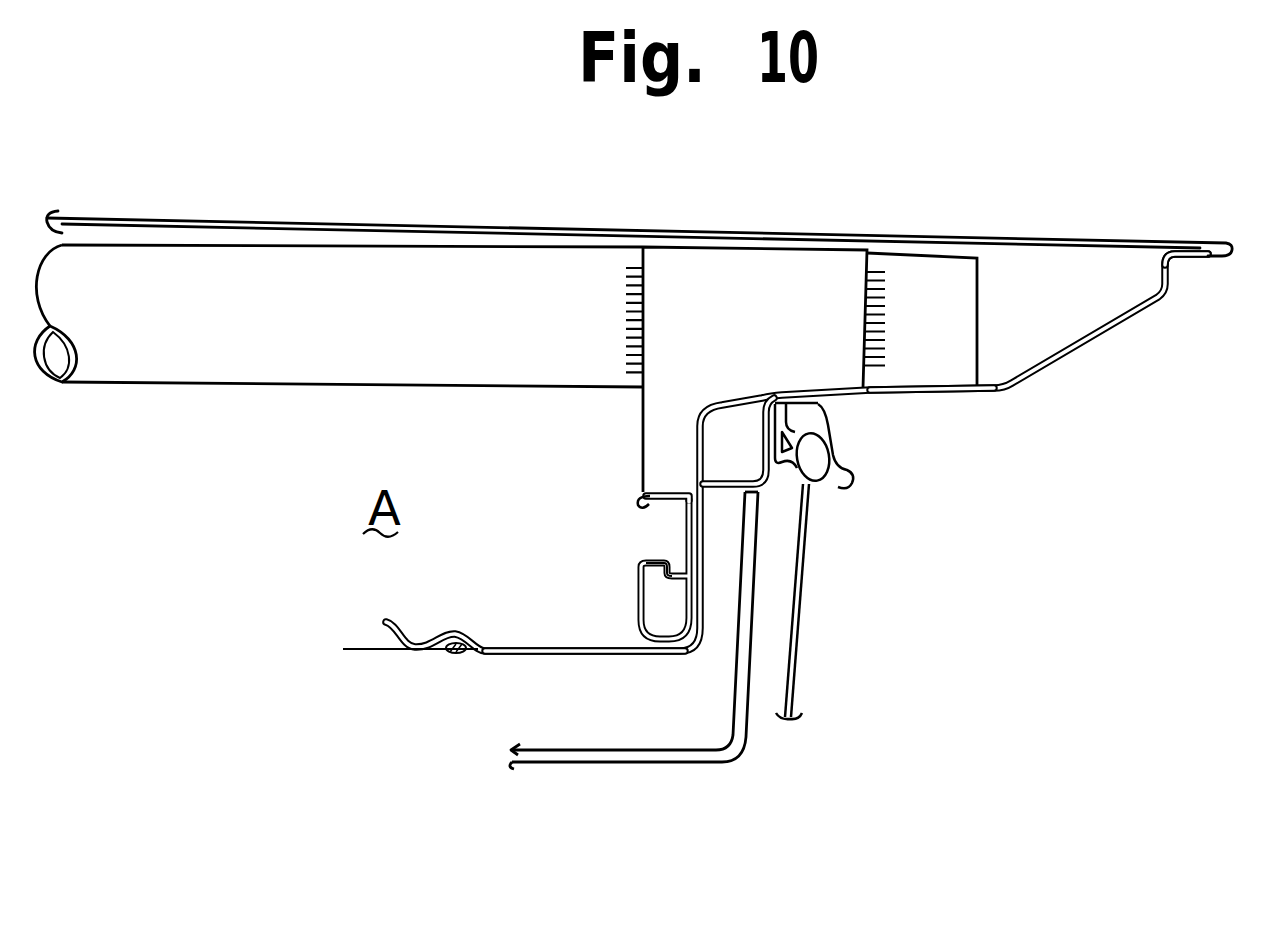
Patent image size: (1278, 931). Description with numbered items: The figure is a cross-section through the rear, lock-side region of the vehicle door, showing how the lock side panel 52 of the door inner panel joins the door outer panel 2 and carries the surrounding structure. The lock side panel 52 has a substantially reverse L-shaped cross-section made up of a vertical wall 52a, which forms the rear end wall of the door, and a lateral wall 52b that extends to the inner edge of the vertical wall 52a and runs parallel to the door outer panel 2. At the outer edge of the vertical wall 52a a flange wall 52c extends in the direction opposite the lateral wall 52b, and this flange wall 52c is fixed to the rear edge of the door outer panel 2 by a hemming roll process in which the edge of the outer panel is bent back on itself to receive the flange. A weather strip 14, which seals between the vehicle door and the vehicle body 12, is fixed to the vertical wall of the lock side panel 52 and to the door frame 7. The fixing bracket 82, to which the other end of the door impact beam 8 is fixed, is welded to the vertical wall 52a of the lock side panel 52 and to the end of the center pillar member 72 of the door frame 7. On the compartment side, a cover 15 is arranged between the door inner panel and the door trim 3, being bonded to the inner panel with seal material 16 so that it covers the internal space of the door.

The door outer panel 2 is at (1013, 238).
The door trim 3 is at (570, 766).
The door frame 7 is at (628, 585).
The door impact beam 8 is at (267, 388).
The vehicle body 12 is at (805, 616).
The weather strip 14 is at (836, 452).
The cover 15 is at (370, 650).
The seal material 16 is at (448, 653).
The lock side panel 52 is at (1067, 372).
The vertical wall 52a is at (947, 394).
The lateral wall 52b is at (595, 656).
The flange wall 52c is at (1190, 242).
The center pillar member 72 is at (659, 563).
The fixing bracket 82 is at (655, 432).